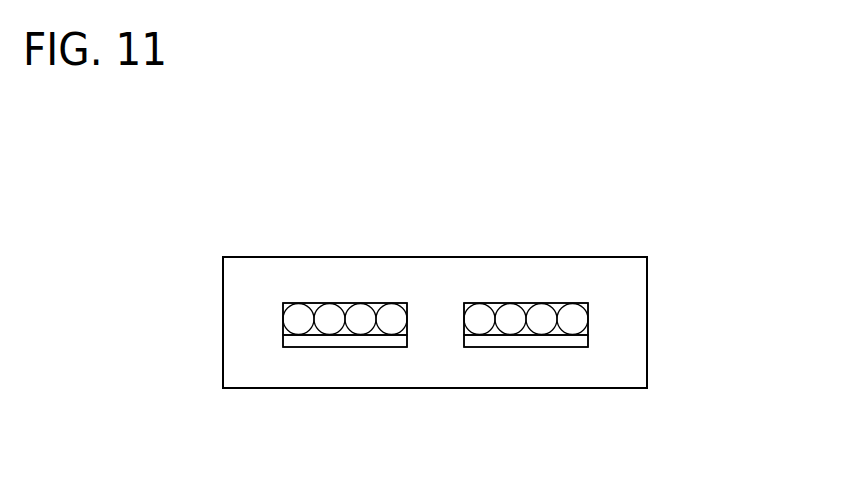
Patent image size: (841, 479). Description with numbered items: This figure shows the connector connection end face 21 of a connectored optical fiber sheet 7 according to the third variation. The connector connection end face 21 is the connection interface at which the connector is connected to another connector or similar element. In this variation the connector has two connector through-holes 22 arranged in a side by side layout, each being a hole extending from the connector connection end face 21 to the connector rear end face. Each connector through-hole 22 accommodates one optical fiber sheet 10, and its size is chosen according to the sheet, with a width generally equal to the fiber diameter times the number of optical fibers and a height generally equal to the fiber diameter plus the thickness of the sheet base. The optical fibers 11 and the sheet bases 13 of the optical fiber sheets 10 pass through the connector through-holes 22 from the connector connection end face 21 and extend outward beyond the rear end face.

The connectored optical fiber sheet 7 is at (428, 219).
The optical fiber sheet 10 is at (163, 278).
The optical fibers 11 is at (322, 312).
The sheet base 13 is at (296, 339).
The connector connection end face 21 is at (334, 383).
The connector through-hole 22 is at (348, 303).